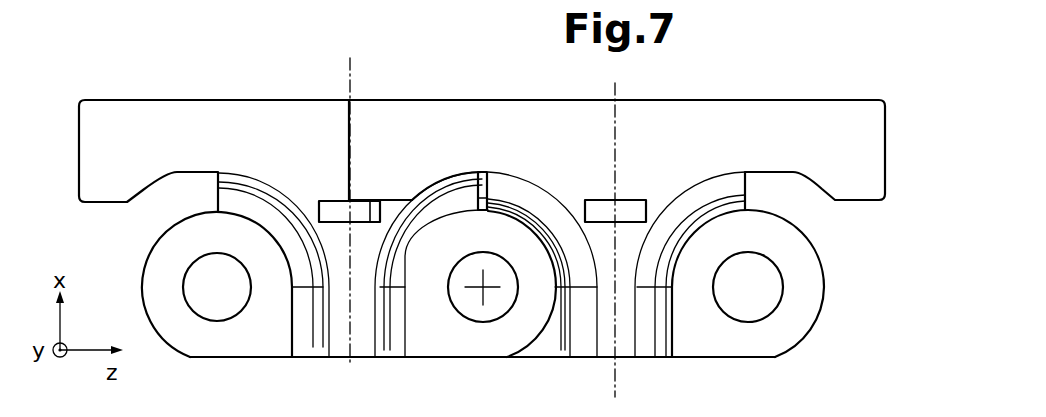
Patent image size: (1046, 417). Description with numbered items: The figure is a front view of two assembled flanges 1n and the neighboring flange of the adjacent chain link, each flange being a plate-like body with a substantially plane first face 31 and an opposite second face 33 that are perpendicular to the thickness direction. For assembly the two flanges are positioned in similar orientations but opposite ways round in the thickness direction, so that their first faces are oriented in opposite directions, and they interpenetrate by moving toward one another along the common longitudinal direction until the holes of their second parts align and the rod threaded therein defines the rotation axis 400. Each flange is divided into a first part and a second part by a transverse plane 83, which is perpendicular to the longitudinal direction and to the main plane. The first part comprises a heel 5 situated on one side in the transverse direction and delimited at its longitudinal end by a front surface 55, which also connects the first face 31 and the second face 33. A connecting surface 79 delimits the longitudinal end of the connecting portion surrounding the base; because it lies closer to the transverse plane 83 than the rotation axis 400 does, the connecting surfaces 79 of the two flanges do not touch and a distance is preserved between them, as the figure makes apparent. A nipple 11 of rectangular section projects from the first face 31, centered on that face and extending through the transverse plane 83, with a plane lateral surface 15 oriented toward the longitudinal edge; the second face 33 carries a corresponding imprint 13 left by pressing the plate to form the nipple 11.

The flange of link n 1n is at (193, 86).
The heel 5 is at (398, 147).
The nipple 11 is at (358, 228).
The imprint 13 is at (628, 200).
The lateral surface 15 is at (333, 201).
The first face 31 is at (233, 151).
The second face 33 is at (583, 144).
The front surface 55 is at (349, 143).
The connecting surface 79 is at (478, 175).
The transverse plane 83 is at (328, 65).
The rotation axis 400 is at (481, 288).